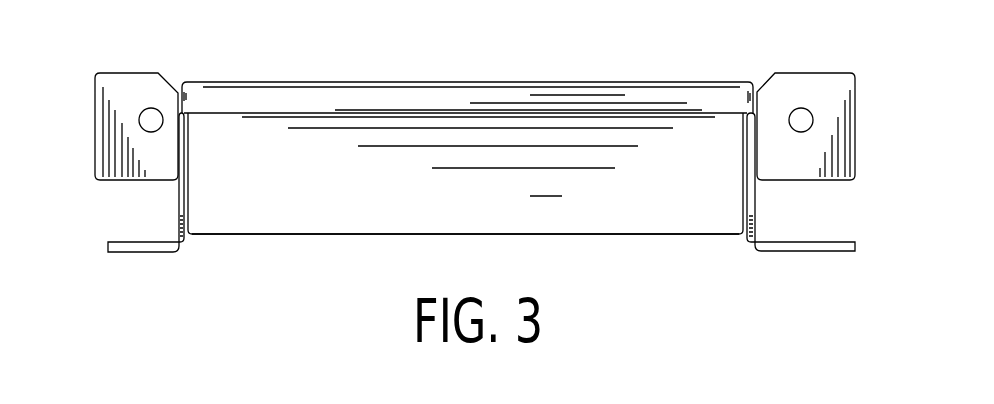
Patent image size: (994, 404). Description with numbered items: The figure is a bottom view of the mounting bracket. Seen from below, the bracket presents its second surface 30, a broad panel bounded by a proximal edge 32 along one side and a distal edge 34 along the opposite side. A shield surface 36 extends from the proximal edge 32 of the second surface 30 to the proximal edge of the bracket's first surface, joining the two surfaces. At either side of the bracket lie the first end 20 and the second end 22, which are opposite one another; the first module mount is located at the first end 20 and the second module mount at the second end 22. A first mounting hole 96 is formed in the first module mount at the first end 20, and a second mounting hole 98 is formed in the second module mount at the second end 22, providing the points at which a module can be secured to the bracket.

The first end 20 is at (88, 133).
The second end 22 is at (865, 130).
The second surface 30 is at (357, 197).
The proximal edge 32 is at (431, 114).
The distal edge 34 is at (327, 234).
The shield surface 36 is at (355, 94).
The first mounting hole 96 is at (151, 117).
The second mounting hole 98 is at (801, 117).